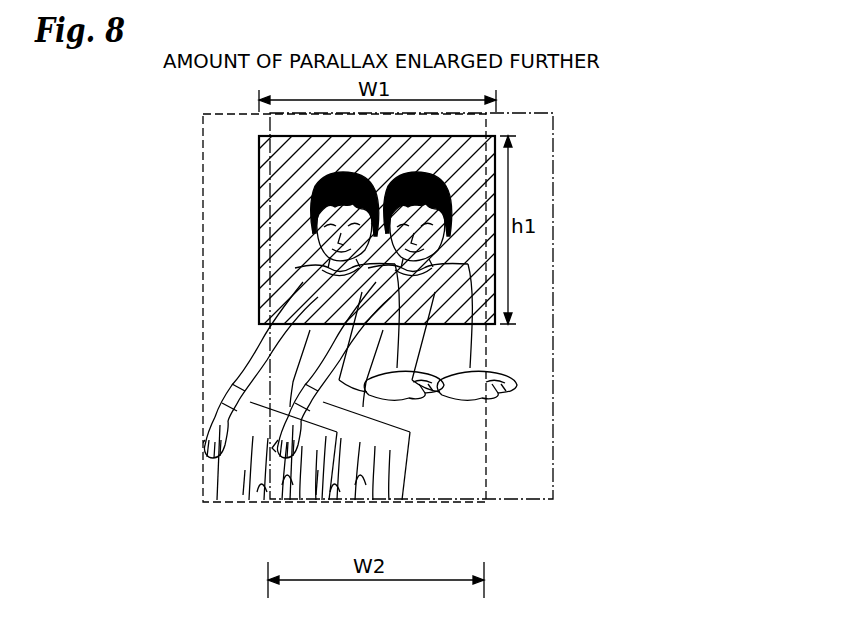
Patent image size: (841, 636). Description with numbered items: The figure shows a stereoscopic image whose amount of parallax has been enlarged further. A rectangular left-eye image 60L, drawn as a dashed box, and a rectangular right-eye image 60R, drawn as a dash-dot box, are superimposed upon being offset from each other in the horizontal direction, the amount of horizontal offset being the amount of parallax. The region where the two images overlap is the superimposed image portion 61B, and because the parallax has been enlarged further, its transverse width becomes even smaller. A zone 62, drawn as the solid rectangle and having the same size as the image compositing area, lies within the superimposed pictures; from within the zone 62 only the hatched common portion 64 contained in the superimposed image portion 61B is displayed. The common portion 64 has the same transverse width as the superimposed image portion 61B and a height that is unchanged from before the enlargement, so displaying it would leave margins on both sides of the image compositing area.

The left-eye image 60L is at (203, 197).
The right-eye image 60R is at (553, 197).
The zone 62 is at (495, 291).
The common portion 64 is at (476, 151).
The superimposed image portion 61B is at (427, 483).